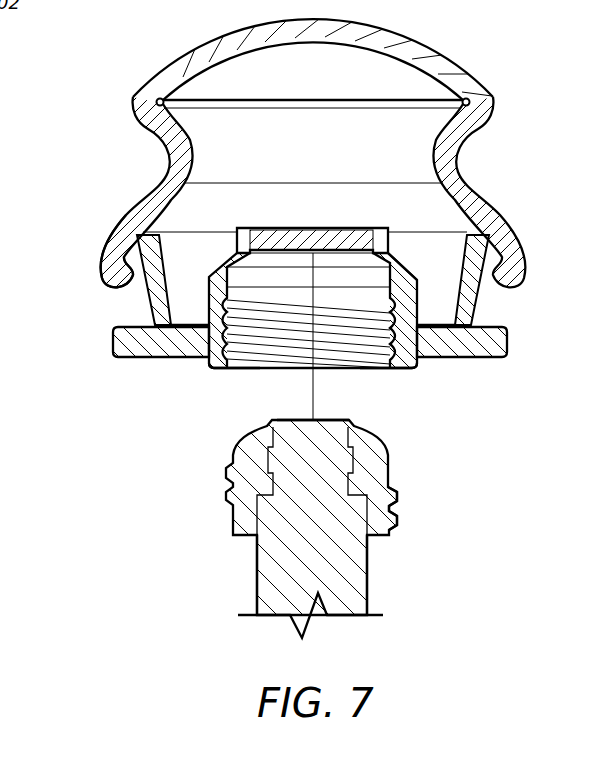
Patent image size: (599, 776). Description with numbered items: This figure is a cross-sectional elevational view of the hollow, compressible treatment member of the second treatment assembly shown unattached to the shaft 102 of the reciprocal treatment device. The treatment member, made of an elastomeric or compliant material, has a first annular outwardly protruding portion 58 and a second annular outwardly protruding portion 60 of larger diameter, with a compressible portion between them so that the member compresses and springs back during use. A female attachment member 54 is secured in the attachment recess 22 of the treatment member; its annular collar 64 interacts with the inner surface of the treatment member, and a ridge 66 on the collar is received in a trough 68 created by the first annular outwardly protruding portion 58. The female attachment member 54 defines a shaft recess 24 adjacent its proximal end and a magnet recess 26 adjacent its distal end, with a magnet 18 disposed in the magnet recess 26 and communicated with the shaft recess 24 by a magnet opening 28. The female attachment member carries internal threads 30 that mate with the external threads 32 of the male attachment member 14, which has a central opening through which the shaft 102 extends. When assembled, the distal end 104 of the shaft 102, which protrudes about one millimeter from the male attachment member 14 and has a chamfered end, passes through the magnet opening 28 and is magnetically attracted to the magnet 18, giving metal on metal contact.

The male attachment member 14 is at (381, 467).
The magnet 18 is at (262, 228).
The attachment recess 22 is at (492, 276).
The shaft recess 24 is at (343, 299).
The magnet recess 26 is at (400, 238).
The magnet opening 28 is at (273, 255).
The internal threads 30 is at (393, 360).
The external threads 32 is at (400, 498).
The female attachment member 54 is at (220, 270).
The first annular outwardly protruding portion 58 is at (97, 263).
The second annular outwardly protruding portion 60 is at (128, 100).
The annular collar 64 is at (212, 278).
The ridge 66 is at (125, 258).
The trough 68 is at (125, 292).
The shaft 102 is at (257, 582).
The distal end of the shaft 104 is at (288, 418).